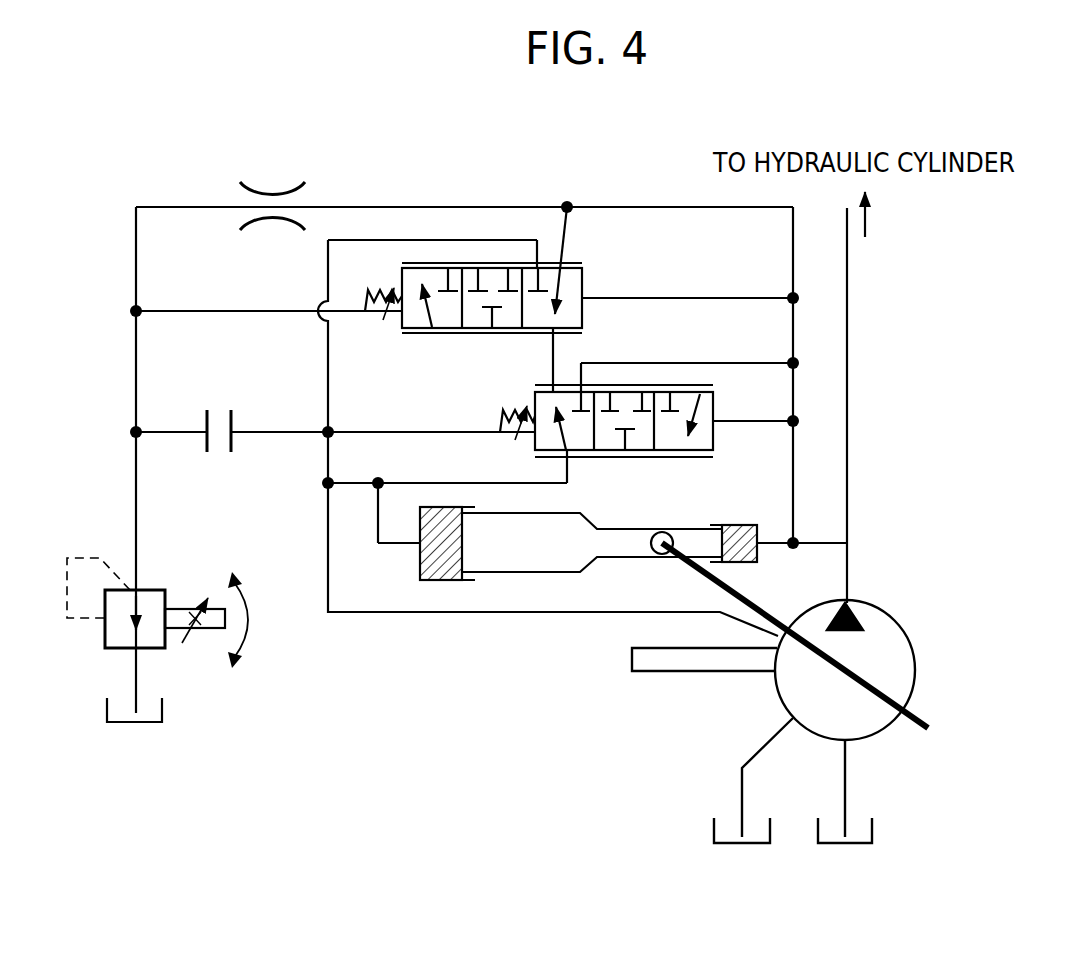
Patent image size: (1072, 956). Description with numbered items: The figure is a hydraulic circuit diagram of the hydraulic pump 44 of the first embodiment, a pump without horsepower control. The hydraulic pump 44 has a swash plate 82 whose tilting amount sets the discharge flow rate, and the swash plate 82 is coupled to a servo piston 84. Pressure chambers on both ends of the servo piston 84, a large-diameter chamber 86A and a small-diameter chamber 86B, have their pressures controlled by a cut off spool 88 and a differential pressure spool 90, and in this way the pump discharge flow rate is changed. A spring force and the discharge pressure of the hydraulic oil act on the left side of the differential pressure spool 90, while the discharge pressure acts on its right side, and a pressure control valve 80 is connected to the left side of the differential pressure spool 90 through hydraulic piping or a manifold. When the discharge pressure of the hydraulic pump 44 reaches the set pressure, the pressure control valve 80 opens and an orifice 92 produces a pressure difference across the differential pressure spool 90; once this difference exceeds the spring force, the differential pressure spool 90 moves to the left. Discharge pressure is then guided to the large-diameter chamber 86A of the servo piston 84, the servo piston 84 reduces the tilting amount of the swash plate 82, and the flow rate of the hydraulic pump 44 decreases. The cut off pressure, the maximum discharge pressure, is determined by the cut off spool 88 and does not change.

The orifice 92 is at (285, 168).
The differential pressure spool 90 is at (612, 270).
The cut off spool 88 is at (728, 386).
The large-diameter chamber 86A is at (420, 567).
The small-diameter chamber 86B is at (732, 524).
The servo piston 84 is at (590, 525).
The swash plate 82 is at (928, 712).
The hydraulic pump 44 is at (905, 627).
The pressure control valve 80 is at (210, 672).